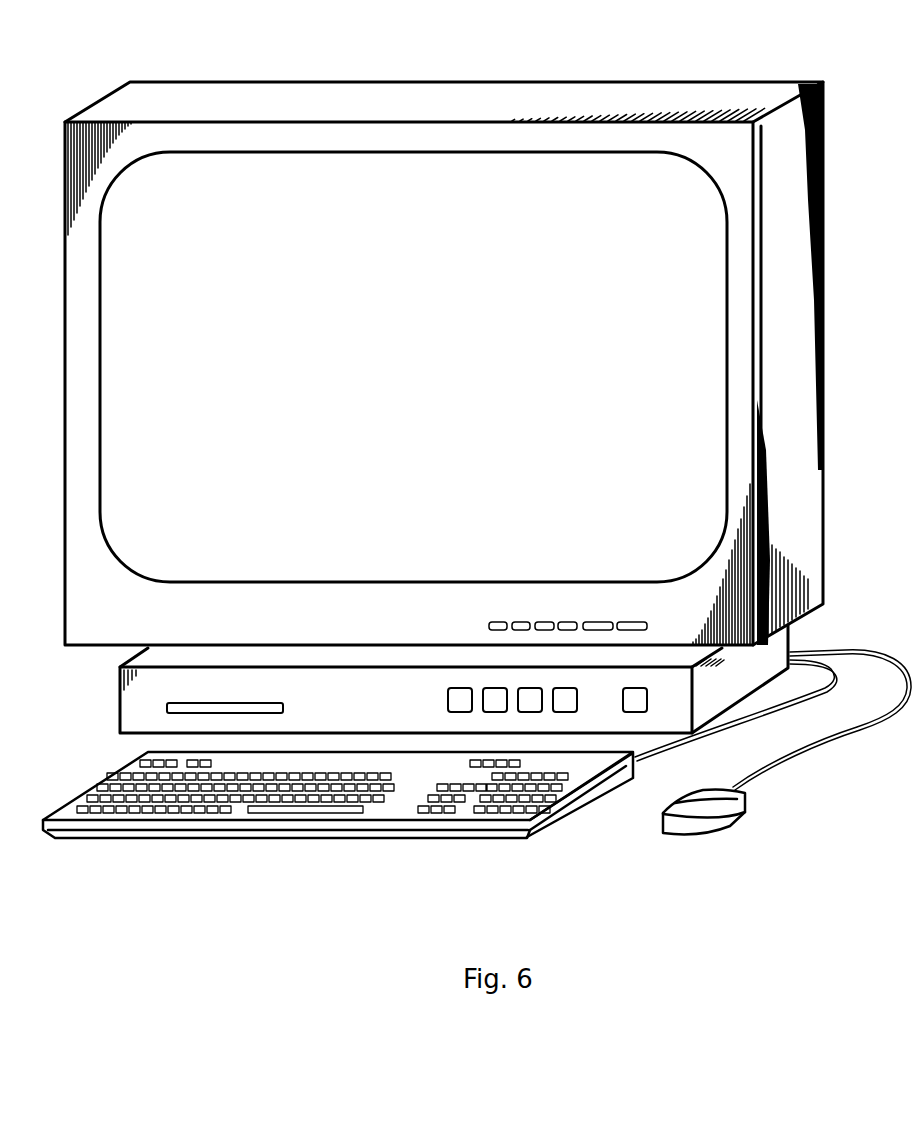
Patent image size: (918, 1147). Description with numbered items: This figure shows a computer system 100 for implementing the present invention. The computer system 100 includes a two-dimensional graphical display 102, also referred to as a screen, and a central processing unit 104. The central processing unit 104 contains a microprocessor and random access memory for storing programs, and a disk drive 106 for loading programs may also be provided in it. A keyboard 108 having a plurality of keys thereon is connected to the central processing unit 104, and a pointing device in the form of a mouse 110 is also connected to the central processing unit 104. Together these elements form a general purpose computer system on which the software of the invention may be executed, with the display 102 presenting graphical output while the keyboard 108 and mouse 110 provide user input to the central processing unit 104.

The computer system 100 is at (197, 68).
The two-dimensional graphical display 102 is at (604, 489).
The central processing unit 104 is at (118, 700).
The disk drive 106 is at (285, 708).
The keyboard 108 is at (95, 787).
The mouse 110 is at (730, 812).